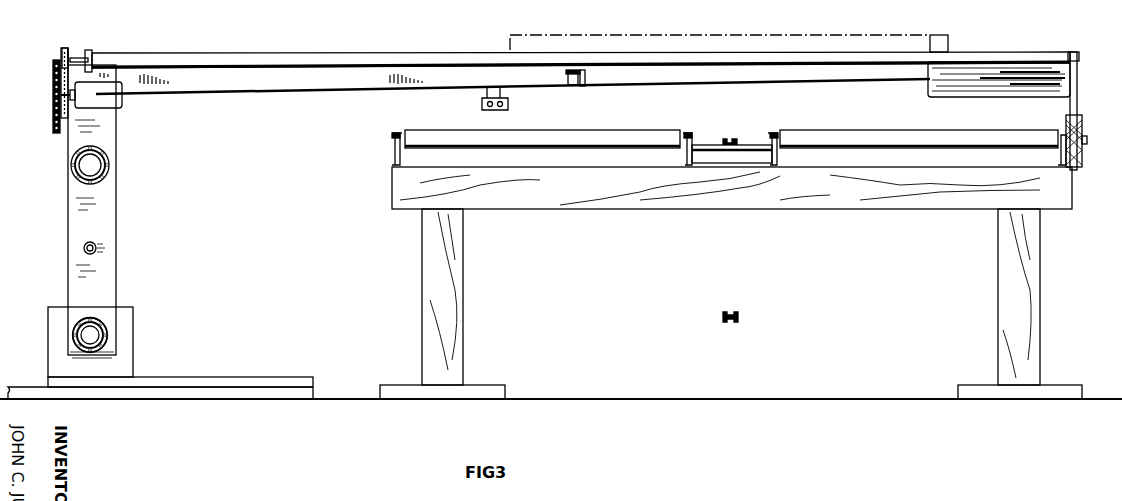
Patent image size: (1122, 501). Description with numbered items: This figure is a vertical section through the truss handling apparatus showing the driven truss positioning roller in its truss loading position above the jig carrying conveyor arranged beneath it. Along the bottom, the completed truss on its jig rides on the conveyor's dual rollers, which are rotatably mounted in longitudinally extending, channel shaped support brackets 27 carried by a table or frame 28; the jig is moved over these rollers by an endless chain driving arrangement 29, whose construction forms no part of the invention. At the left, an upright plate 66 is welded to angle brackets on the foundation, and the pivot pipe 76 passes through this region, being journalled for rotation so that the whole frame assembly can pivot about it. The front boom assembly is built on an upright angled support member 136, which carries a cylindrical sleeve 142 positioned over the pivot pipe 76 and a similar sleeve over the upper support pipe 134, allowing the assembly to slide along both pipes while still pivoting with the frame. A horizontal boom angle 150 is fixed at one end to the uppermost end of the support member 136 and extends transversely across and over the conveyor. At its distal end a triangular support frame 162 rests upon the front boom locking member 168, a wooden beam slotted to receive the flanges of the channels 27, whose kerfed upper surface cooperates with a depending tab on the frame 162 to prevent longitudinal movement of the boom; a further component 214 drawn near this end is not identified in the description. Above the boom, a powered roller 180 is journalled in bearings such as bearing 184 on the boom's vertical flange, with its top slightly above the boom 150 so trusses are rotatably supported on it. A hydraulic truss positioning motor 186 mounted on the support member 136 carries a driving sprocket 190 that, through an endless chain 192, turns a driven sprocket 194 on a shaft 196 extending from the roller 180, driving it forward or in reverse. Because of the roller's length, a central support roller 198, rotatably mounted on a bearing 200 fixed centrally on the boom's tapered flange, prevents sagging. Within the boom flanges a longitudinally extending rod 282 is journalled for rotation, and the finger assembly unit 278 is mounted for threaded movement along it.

The channel shaped support bracket 27 is at (395, 150).
The table or frame 28 is at (560, 215).
The endless chain driving arrangement 29 is at (732, 142).
The upright plate 66 is at (133, 358).
The pivot pipe 76 is at (103, 340).
The upper support pipe 134 is at (109, 165).
The upright angled support member 136 is at (116, 257).
The cylindrical sleeve 142 is at (100, 322).
The horizontal boom angle 150 is at (310, 90).
The triangular support frame 162 is at (1078, 100).
The front boom locking member 168 is at (1083, 165).
The powered roller 180 is at (183, 60).
The bearing 184 is at (92, 53).
The hydraulic truss positioning motor 186 is at (104, 104).
The driving sprocket 190 is at (52, 105).
The endless chain 192 is at (58, 82).
The driven sprocket 194 is at (63, 48).
The shaft 196 is at (79, 58).
The central support roller 198 is at (572, 86).
The bearing 200 is at (585, 82).
The cylinder 214 is at (1003, 97).
The finger assembly unit 278 is at (478, 97).
The longitudinally extending rod 282 is at (95, 246).